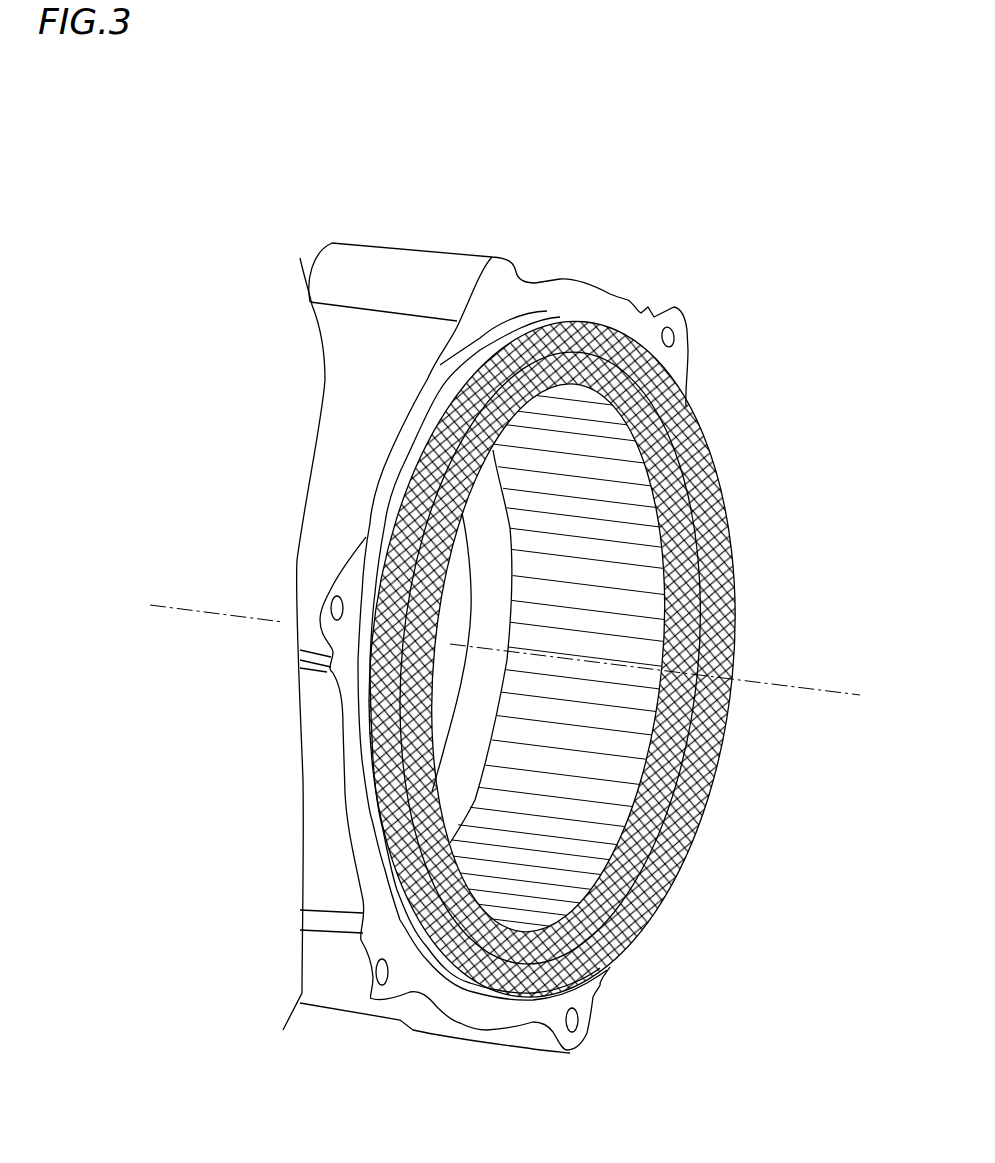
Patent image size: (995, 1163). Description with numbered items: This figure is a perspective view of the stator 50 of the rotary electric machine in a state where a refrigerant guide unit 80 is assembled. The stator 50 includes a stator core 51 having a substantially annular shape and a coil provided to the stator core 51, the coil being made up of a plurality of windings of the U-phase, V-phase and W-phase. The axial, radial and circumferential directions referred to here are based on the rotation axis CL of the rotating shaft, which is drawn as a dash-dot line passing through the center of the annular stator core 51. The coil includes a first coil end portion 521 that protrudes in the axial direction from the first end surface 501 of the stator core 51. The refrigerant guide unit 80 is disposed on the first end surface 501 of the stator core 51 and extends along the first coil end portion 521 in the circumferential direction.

The stator 50 is at (485, 627).
The stator core 51 is at (347, 278).
The first end surface 501 is at (553, 291).
The first coil end portion 521 is at (712, 431).
The refrigerant guide unit 80 is at (430, 957).
The rotation axis CL is at (783, 687).